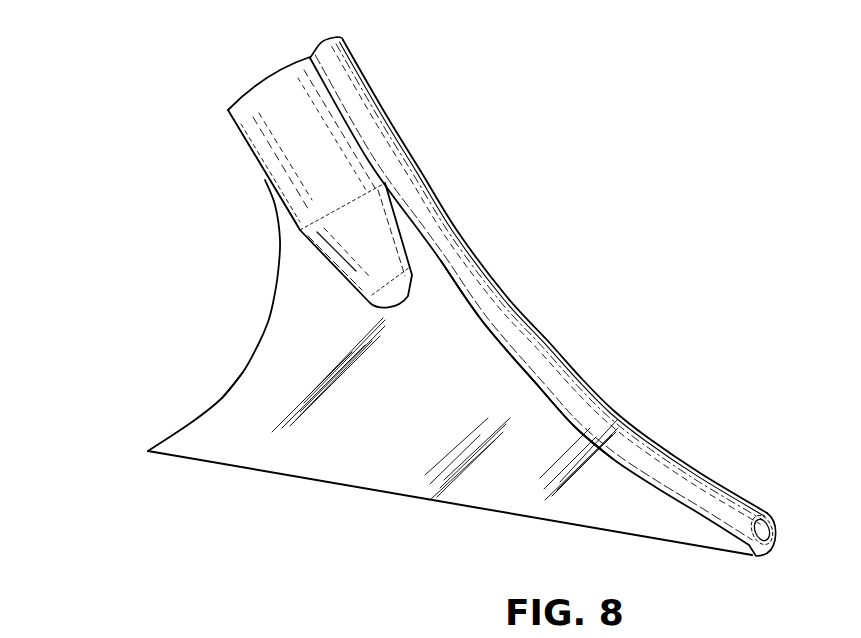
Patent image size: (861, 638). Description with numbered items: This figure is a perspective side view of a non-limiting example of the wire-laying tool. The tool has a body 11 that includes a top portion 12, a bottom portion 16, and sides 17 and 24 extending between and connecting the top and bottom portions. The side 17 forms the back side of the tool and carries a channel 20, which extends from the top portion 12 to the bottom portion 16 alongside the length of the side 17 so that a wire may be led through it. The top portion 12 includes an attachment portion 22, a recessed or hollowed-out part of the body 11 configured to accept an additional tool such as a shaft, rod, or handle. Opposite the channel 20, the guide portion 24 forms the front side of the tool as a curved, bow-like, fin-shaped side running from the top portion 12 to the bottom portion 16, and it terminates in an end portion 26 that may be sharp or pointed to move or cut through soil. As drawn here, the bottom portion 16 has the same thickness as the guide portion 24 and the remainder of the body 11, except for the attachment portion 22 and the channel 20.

The body 11 is at (480, 353).
The top portion 12 is at (280, 90).
The bottom portion 16 is at (300, 478).
The side 17 is at (570, 430).
The channel 20 is at (552, 393).
The attachment portion 22 is at (313, 172).
The guide portion 24 is at (268, 338).
The end portion 26 is at (141, 453).